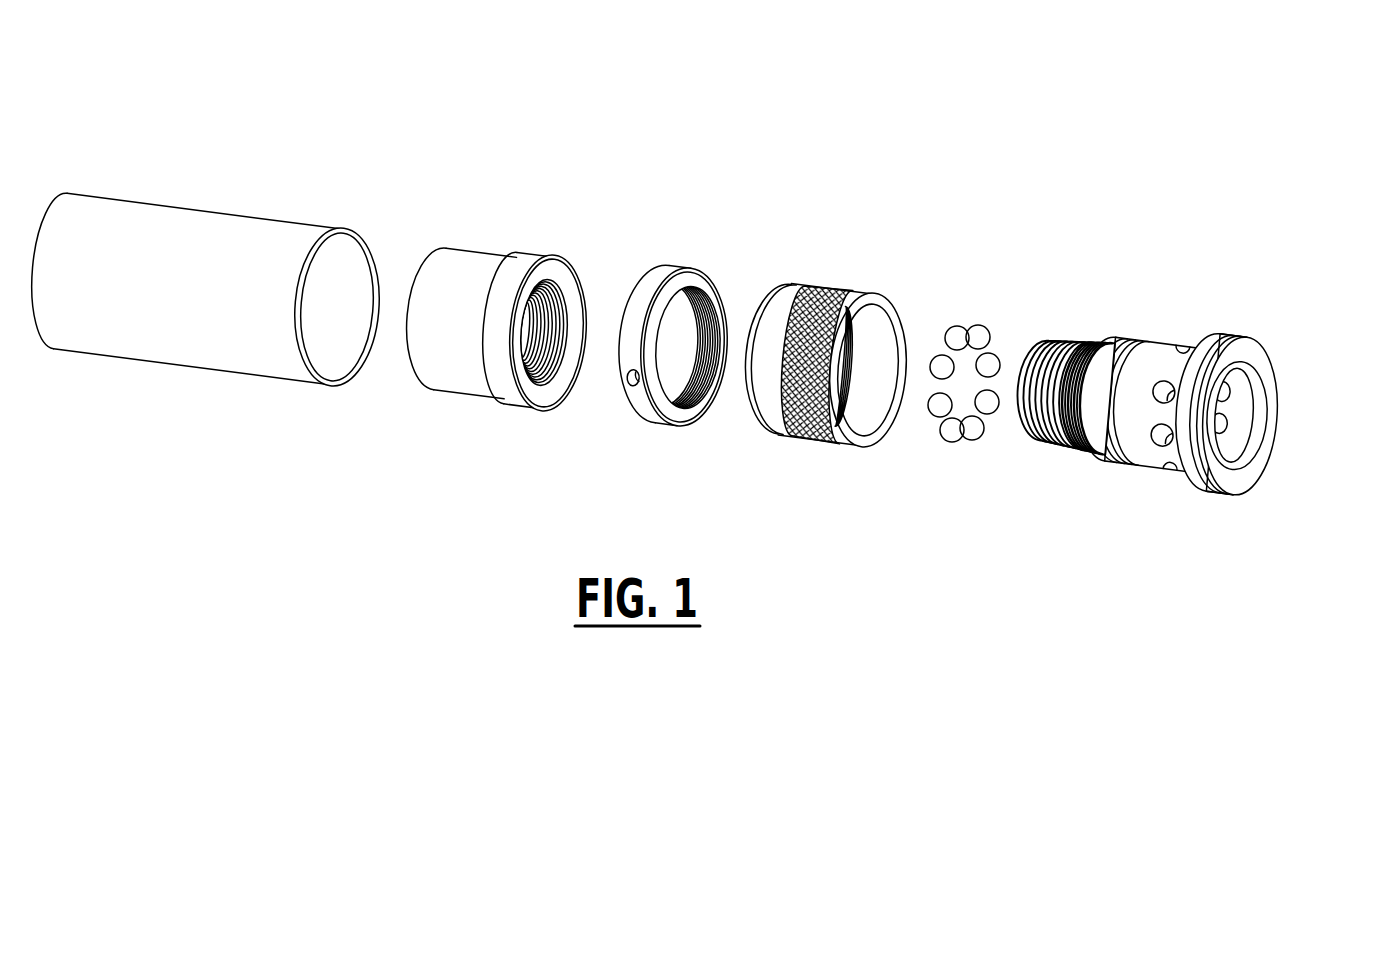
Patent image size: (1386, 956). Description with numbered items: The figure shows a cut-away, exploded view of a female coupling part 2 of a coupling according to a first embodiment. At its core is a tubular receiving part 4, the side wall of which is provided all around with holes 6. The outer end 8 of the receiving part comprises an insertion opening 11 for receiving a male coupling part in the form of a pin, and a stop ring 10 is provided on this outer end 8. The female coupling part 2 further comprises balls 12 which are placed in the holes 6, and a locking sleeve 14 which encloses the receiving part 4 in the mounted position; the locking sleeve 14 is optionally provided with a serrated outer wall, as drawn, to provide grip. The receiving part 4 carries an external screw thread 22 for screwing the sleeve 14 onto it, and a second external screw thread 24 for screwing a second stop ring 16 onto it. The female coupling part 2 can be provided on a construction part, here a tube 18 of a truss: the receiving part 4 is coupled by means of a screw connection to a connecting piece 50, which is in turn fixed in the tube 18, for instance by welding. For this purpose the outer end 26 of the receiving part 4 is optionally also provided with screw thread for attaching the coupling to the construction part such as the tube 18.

The female coupling part 2 is at (1188, 349).
The tubular receiving part 4 is at (1130, 343).
The holes 6 is at (1180, 356).
The outer end 8 is at (1278, 321).
The stop ring 10 is at (1227, 488).
The insertion opening 11 is at (1256, 418).
The balls 12 is at (909, 473).
The locking sleeve 14 is at (840, 300).
The second stop ring 16 is at (667, 274).
The tube 18 is at (283, 230).
The external screw thread 22 is at (1158, 343).
The second external screw thread 24 is at (1090, 450).
The outer end of receiving part 26 is at (1055, 305).
The connecting piece 50 is at (431, 452).